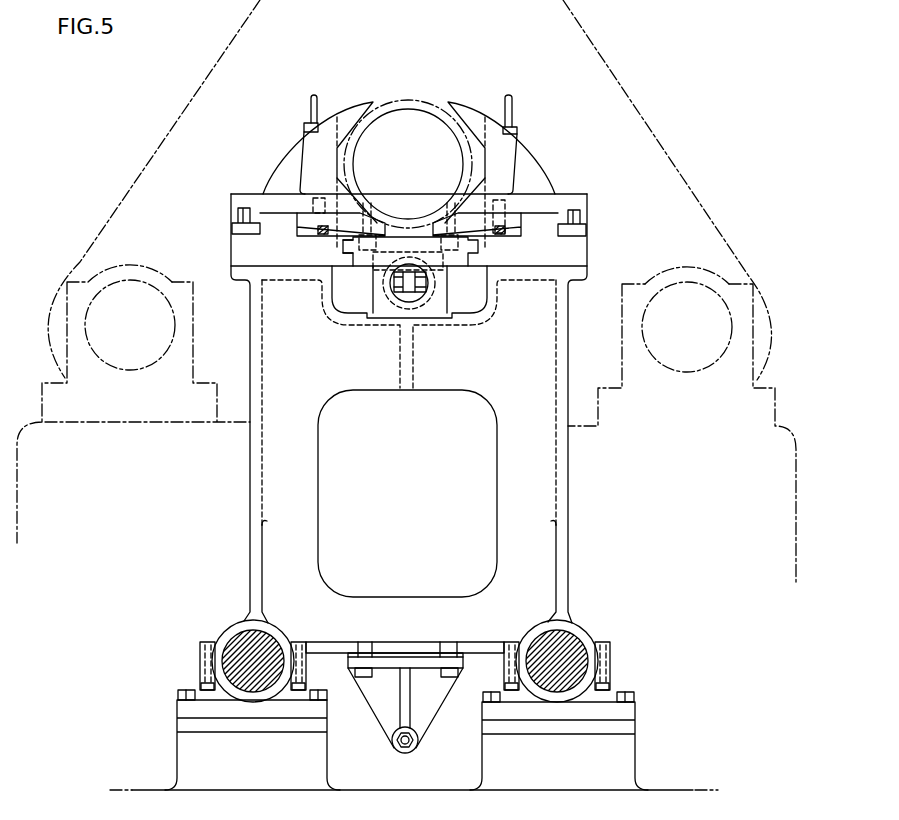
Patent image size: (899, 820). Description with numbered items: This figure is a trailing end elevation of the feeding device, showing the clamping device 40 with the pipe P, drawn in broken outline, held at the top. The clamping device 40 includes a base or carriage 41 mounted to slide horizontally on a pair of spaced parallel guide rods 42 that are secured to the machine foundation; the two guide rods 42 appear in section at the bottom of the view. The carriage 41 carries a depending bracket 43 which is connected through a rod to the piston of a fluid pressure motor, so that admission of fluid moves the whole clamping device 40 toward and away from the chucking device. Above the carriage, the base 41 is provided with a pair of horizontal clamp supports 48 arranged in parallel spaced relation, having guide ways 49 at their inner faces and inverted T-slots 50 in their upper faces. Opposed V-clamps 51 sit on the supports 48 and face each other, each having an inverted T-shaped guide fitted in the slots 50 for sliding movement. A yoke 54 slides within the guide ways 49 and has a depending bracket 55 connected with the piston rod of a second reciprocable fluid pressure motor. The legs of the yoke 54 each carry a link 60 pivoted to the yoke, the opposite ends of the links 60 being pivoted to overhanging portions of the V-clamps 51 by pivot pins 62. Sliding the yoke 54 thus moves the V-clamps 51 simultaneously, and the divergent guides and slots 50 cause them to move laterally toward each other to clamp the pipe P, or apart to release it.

The pipe P is at (402, 100).
The clamping device 40 is at (567, 548).
The base or carriage 41 is at (547, 479).
The guide rods 42 is at (235, 637).
The depending bracket 43 is at (423, 720).
The horizontal clamp supports 48 is at (278, 263).
The guide ways 49 is at (343, 253).
The inverted T-slots 50 is at (245, 233).
The V-clamps 51 is at (325, 161).
The yoke 54 is at (410, 245).
The depending bracket 55 is at (410, 279).
The links 60 is at (467, 222).
The pivot pins 62 is at (506, 232).